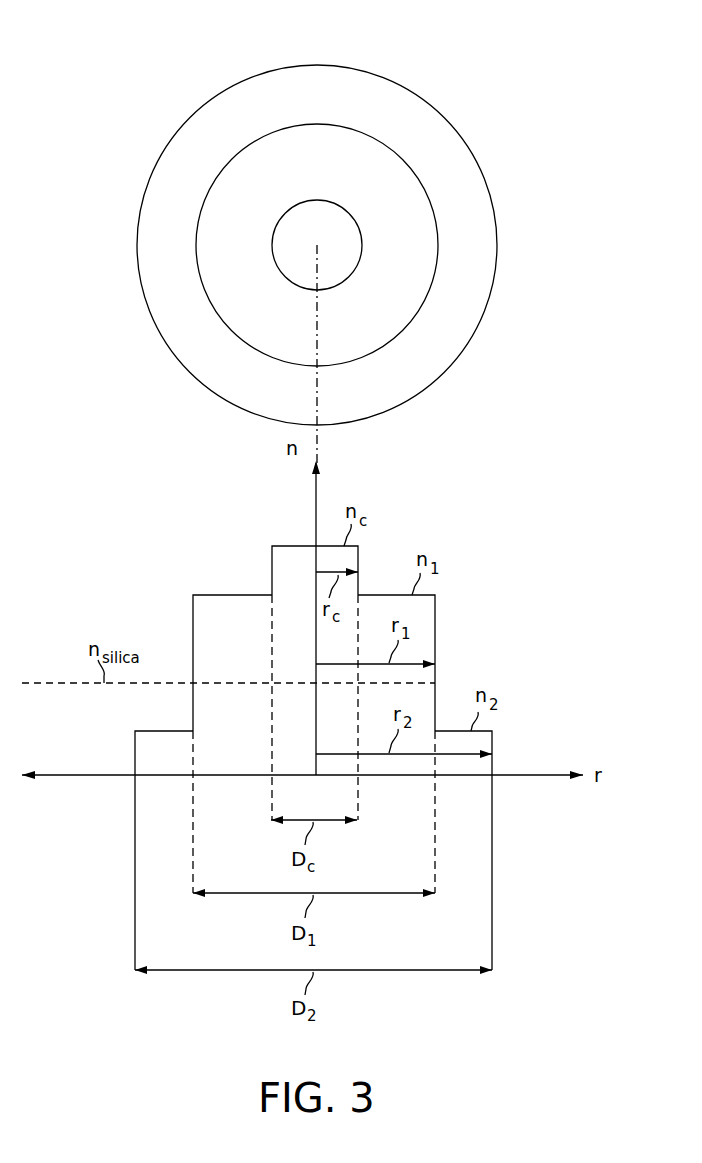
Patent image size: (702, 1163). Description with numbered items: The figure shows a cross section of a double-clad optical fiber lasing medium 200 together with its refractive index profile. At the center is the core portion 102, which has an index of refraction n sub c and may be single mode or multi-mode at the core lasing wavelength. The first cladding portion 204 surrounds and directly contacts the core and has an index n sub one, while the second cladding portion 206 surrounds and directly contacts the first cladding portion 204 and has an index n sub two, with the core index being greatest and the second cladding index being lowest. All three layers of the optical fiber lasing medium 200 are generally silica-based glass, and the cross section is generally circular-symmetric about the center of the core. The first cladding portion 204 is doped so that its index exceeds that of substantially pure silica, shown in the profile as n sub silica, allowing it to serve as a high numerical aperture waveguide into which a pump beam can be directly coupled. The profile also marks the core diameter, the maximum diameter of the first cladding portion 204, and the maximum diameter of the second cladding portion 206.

The optical fiber lasing medium 200 is at (353, 218).
The core 102 is at (317, 200).
The first cladding portion 204 is at (430, 200).
The second cladding portion 206 is at (498, 247).